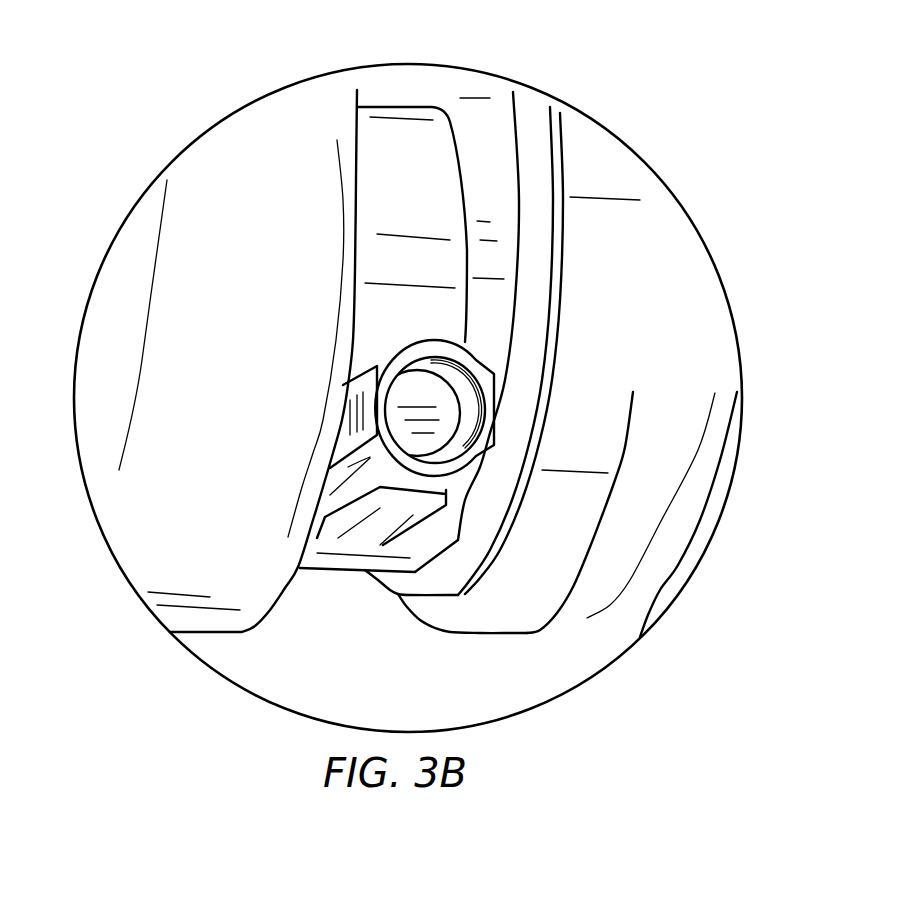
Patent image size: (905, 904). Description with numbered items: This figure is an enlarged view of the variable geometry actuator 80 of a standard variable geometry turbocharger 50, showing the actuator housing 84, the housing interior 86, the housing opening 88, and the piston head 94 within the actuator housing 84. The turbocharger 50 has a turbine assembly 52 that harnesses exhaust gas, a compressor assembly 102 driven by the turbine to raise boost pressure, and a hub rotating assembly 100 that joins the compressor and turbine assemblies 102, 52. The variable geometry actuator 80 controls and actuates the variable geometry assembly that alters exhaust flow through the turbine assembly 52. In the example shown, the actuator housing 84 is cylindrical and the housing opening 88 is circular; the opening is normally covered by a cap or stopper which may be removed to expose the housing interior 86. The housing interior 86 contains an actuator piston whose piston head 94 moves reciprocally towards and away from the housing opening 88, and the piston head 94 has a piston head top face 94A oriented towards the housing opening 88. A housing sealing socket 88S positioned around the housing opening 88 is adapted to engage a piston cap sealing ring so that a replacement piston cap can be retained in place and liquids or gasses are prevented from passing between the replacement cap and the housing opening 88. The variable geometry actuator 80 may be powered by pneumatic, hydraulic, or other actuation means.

The turbocharger 50 is at (457, 654).
The turbine assembly 52 is at (128, 487).
The variable geometry actuator 80 is at (395, 478).
The actuator housing 84 is at (327, 472).
The housing interior 86 is at (443, 382).
The housing opening 88 is at (376, 418).
The housing sealing socket 88S is at (450, 403).
The piston head 94 is at (420, 378).
The piston head top face 94A is at (402, 391).
The hub rotating assembly 100 is at (417, 133).
The compressor assembly 102 is at (627, 182).